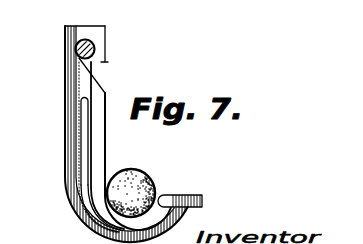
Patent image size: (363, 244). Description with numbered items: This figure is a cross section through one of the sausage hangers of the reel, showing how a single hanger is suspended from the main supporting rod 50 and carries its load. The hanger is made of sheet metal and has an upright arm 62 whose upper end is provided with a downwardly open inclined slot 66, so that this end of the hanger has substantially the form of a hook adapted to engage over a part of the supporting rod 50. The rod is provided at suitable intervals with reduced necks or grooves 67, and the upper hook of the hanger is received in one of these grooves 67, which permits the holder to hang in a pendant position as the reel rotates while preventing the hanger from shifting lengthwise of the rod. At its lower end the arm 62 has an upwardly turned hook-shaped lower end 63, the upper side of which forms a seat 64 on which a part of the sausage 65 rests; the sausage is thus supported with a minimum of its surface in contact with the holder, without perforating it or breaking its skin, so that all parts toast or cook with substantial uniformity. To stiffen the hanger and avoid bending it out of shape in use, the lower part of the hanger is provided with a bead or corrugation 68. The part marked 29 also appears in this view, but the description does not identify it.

The bracket plate 29 is at (123, 13).
The main supporting rod 50 is at (92, 42).
The upright arm 62 is at (72, 142).
The hook-shaped lower end 63 is at (108, 214).
The seat 64 is at (202, 206).
The sausage 65 is at (156, 182).
The inclined slot 66 is at (97, 82).
The reduced neck or groove 67 is at (105, 62).
The bead or corrugation 68 is at (83, 181).